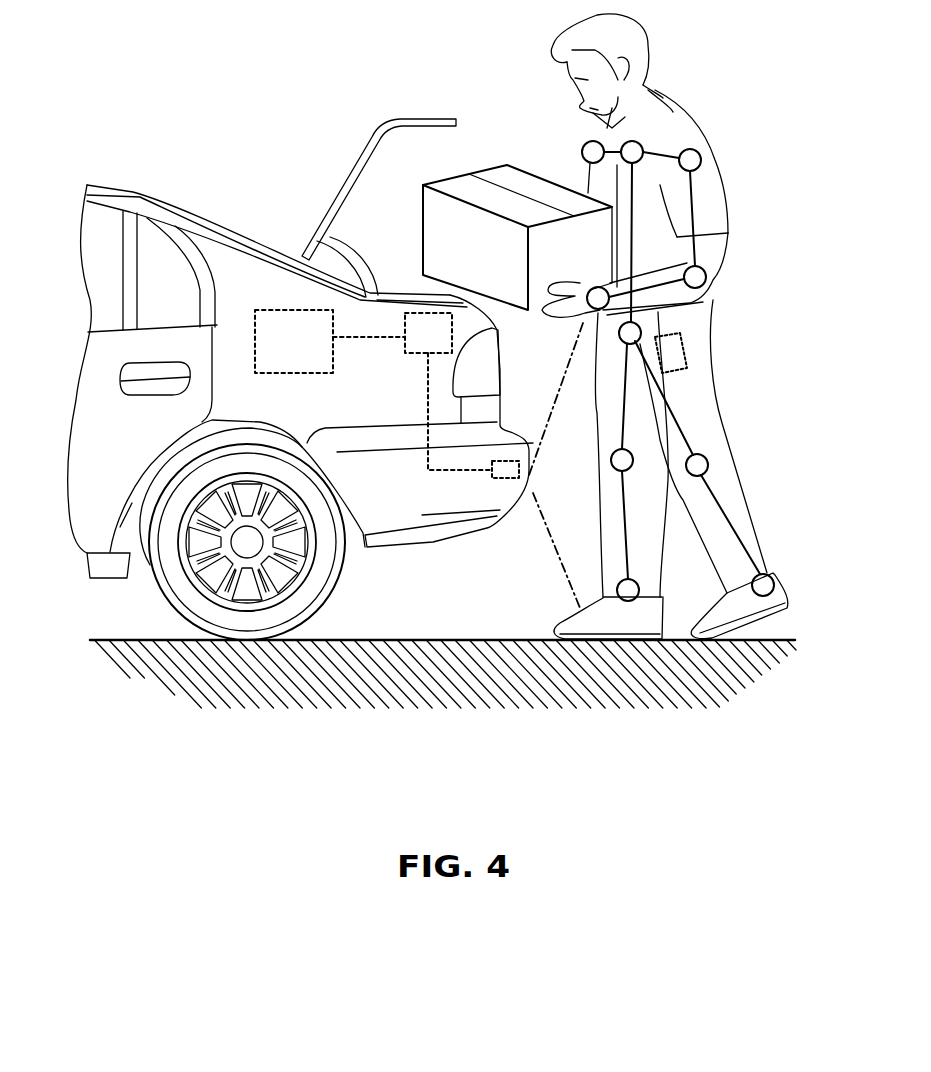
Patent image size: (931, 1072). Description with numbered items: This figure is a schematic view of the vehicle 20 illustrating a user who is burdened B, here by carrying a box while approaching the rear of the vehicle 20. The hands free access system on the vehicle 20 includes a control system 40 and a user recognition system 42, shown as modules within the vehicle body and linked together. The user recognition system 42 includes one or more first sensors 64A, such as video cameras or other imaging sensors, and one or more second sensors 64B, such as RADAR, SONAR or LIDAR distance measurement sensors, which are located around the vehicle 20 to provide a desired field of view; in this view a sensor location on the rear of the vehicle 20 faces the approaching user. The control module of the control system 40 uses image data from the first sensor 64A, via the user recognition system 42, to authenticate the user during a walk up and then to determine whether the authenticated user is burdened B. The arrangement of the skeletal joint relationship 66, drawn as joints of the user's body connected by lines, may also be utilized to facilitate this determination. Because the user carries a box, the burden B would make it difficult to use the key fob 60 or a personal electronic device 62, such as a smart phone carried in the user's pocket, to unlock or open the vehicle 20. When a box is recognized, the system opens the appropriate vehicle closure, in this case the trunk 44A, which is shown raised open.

The vehicle 20 is at (111, 172).
The vehicle trunk 44A is at (425, 117).
The control system 40 is at (304, 351).
The user recognition system 42 is at (438, 344).
The first sensor 64A is at (492, 528).
The second sensor 64B is at (503, 479).
The key fob 60 is at (724, 347).
The personal electronic device 62 is at (686, 347).
The skeletal joint relationship 66 is at (655, 203).
The burden B is at (483, 152).